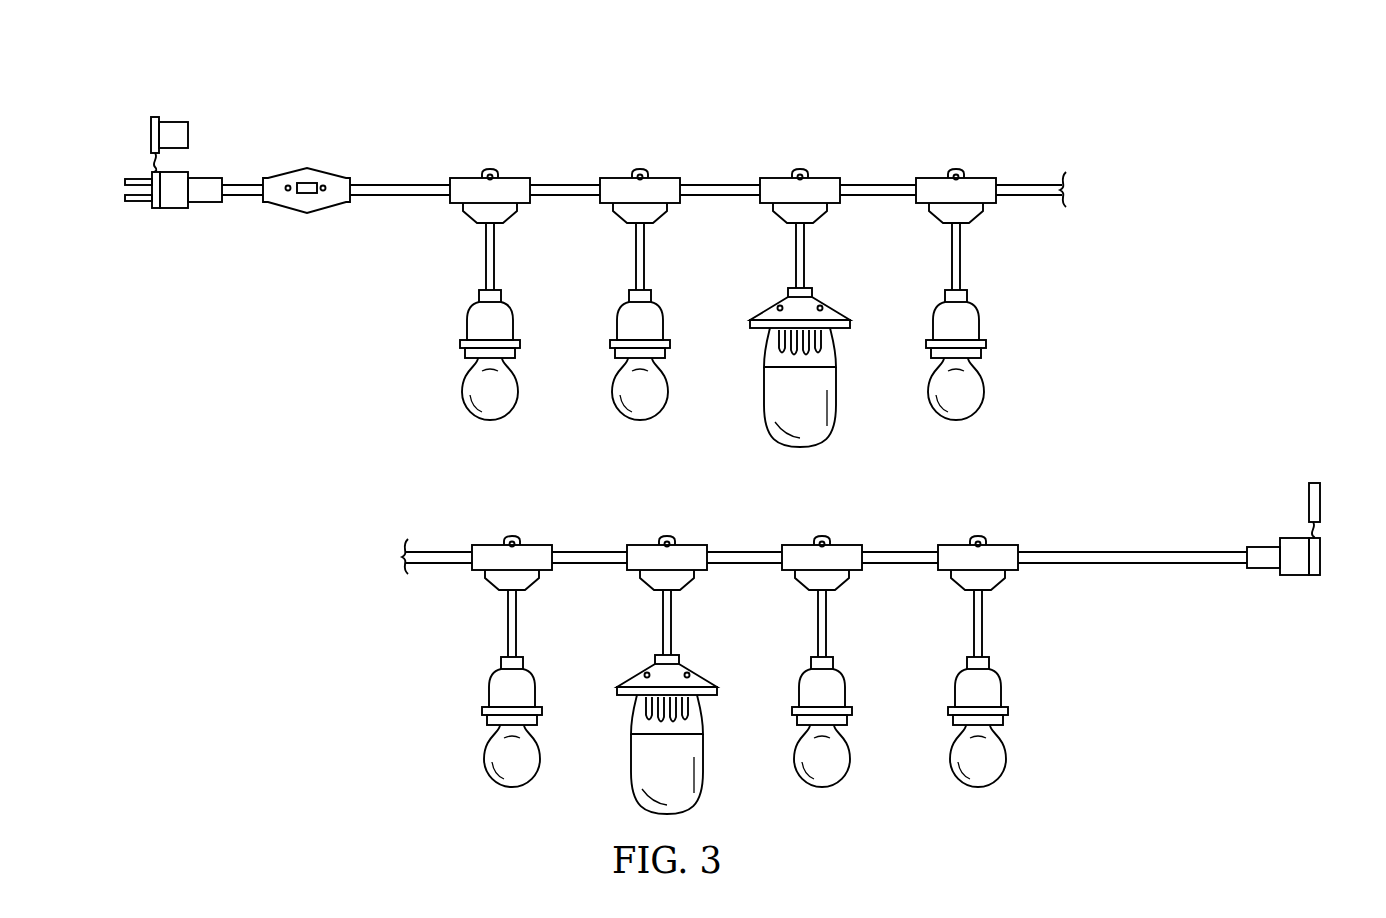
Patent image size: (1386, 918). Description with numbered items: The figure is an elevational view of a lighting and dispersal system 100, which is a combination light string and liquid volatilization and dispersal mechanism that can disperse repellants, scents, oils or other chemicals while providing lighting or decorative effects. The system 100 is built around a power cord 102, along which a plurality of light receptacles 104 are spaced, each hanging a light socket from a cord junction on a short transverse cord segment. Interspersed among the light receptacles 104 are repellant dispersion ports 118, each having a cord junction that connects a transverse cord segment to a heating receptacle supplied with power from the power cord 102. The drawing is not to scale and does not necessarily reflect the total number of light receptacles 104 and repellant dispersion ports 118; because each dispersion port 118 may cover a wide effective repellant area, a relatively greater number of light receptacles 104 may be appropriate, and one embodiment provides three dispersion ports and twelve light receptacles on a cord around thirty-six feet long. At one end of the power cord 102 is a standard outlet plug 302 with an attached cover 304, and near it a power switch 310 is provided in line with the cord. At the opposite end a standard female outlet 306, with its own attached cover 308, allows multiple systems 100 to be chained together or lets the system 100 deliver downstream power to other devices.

The lighting and dispersal system 100 is at (1050, 106).
The power cord 102 is at (412, 184).
The light receptacle 104 is at (477, 157).
The repellant dispersion port 118 is at (813, 155).
The standard outlet plug 302 is at (155, 209).
The cover 304 is at (172, 121).
The standard female outlet 306 is at (1314, 577).
The cover 308 is at (1314, 483).
The power switch 310 is at (291, 172).